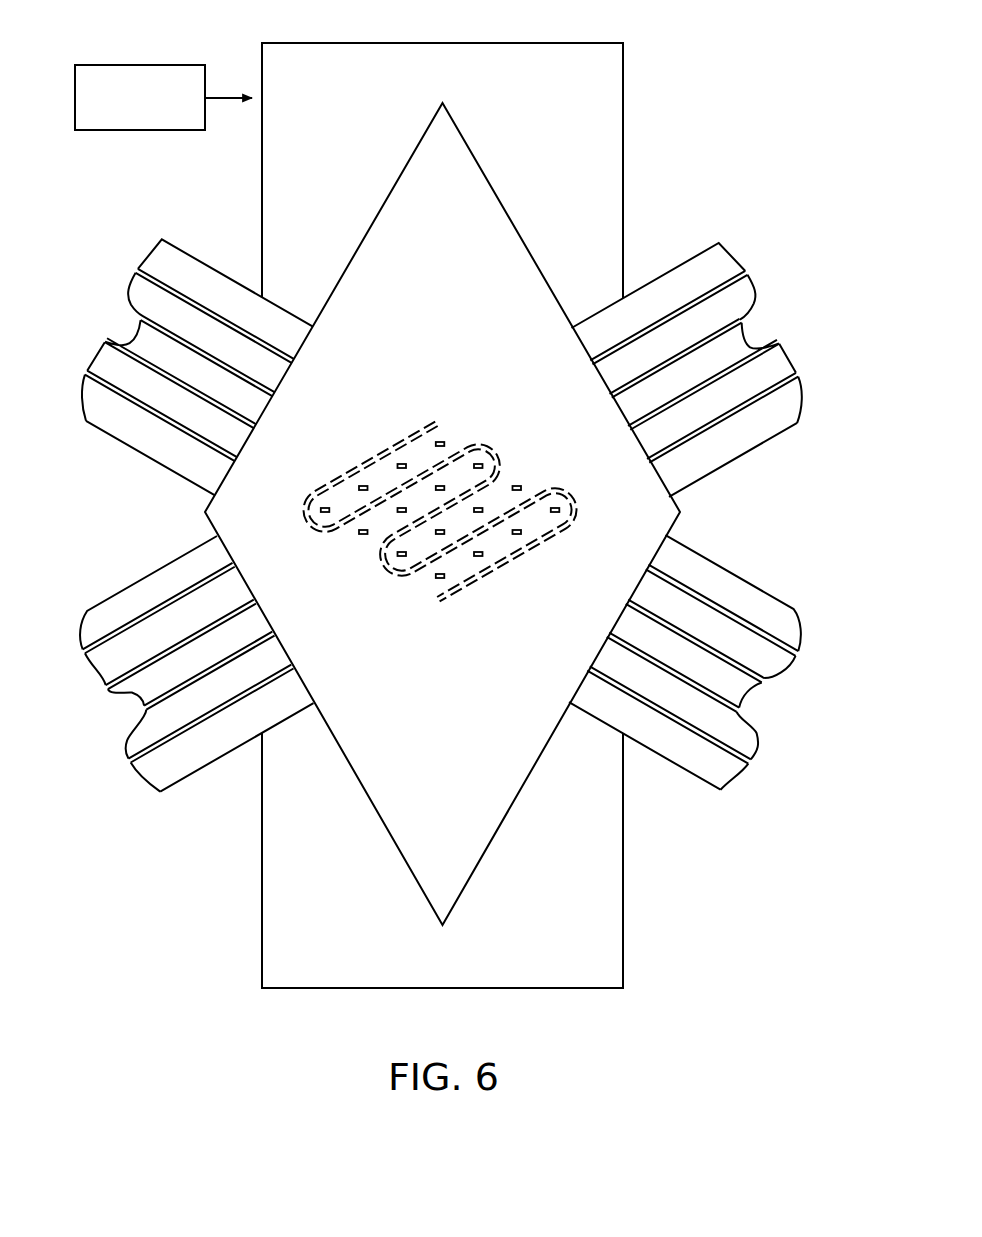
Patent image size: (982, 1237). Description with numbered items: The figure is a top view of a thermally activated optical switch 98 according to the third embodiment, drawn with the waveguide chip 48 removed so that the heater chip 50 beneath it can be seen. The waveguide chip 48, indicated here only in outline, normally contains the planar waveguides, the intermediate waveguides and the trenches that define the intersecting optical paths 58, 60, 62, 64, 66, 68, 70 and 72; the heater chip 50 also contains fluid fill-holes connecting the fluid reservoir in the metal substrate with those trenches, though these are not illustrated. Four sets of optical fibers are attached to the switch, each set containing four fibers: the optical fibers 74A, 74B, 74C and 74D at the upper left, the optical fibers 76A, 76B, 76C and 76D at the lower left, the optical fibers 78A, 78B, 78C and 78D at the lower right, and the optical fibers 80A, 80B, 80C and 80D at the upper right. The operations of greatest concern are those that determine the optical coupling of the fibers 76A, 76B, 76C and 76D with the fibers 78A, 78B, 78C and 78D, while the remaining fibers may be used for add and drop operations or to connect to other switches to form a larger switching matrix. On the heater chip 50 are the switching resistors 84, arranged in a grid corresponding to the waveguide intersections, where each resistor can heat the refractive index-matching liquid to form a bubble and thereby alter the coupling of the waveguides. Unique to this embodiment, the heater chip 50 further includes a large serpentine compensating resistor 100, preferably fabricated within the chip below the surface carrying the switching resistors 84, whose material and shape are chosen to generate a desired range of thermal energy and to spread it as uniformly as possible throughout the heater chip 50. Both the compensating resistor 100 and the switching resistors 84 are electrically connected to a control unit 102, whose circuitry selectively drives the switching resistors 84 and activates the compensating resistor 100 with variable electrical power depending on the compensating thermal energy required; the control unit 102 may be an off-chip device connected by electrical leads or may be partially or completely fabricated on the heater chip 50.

The waveguide chip 48 is at (519, 236).
The heater chip 50 is at (543, 42).
The optical path 58 is at (76, 658).
The optical path 60 is at (98, 690).
The optical path 62 is at (117, 724).
The optical path 64 is at (127, 763).
The optical path 66 is at (752, 758).
The optical path 68 is at (767, 723).
The optical path 70 is at (787, 690).
The optical path 72 is at (803, 658).
The optical fiber 74A is at (153, 275).
The optical fiber 74B is at (143, 305).
The optical fiber 74C is at (131, 342).
The optical fiber 74D is at (102, 362).
The optical fiber 76A is at (143, 612).
The optical fiber 76B is at (222, 612).
The optical fiber 76C is at (193, 680).
The optical fiber 76D is at (163, 743).
The optical fiber 78A is at (673, 583).
The optical fiber 78B is at (703, 643).
The optical fiber 78C is at (687, 682).
The optical fiber 78D is at (717, 743).
The optical fiber 80A is at (725, 278).
The optical fiber 80B is at (738, 310).
The optical fiber 80C is at (747, 347).
The optical fiber 80D is at (772, 377).
The switching resistors 84 is at (446, 438).
The thermally activated optical switch 98 is at (747, 106).
The serpentine compensating resistor 100 is at (408, 437).
The control unit 102 is at (155, 65).